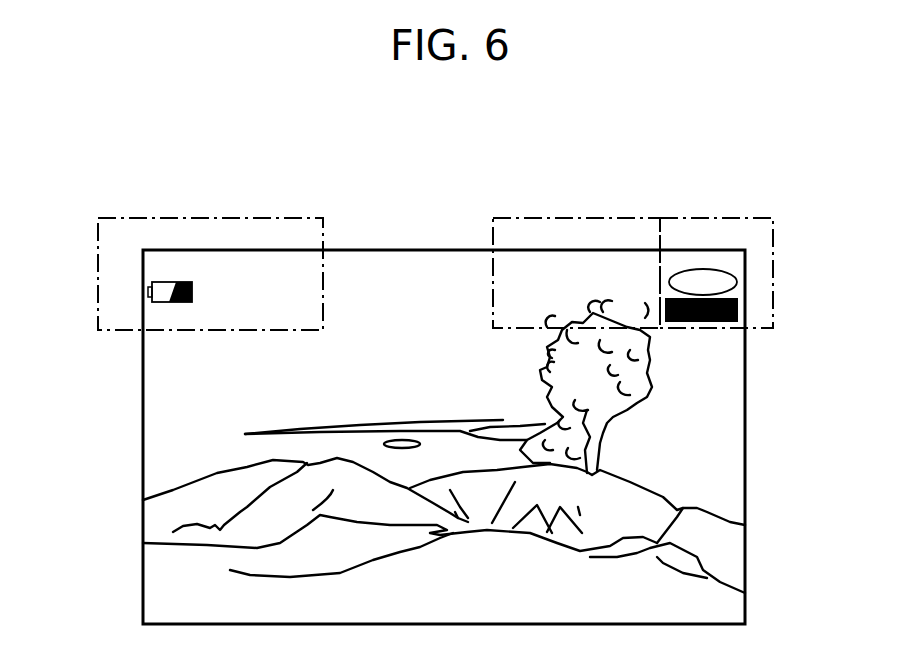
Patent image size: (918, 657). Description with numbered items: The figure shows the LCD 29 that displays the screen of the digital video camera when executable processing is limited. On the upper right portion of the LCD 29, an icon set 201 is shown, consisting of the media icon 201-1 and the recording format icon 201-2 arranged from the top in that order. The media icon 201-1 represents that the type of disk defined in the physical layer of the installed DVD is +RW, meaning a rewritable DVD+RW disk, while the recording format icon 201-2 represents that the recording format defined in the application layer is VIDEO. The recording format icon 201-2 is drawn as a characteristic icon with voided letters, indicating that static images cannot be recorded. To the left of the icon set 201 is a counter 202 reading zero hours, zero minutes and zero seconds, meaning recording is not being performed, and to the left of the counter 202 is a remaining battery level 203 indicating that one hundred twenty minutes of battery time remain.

The LCD 29 is at (143, 423).
The icon set 201 is at (722, 213).
The media icon 201-1 is at (727, 275).
The recording format icon 201-2 is at (738, 307).
The counter 202 is at (577, 213).
The remaining battery level 203 is at (222, 213).